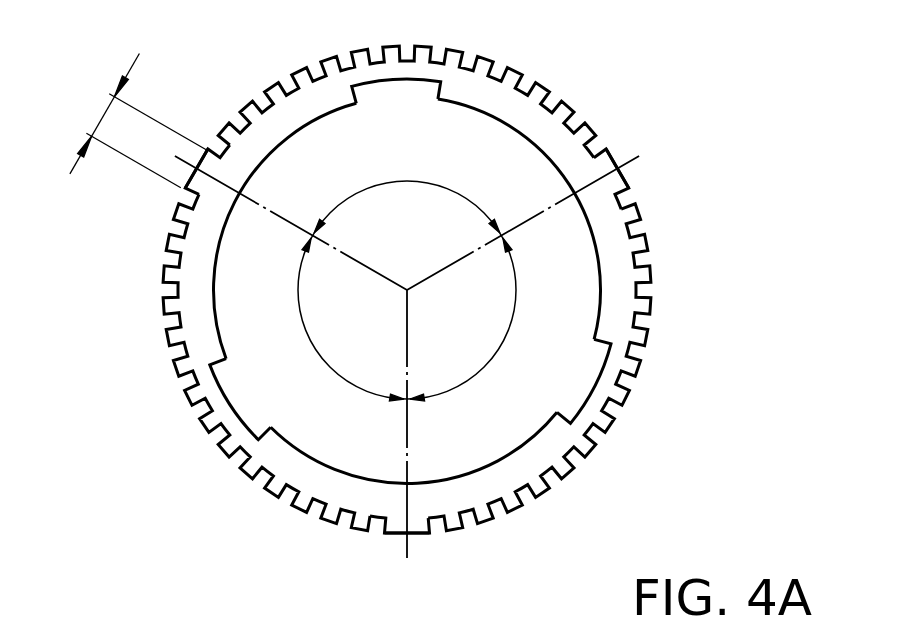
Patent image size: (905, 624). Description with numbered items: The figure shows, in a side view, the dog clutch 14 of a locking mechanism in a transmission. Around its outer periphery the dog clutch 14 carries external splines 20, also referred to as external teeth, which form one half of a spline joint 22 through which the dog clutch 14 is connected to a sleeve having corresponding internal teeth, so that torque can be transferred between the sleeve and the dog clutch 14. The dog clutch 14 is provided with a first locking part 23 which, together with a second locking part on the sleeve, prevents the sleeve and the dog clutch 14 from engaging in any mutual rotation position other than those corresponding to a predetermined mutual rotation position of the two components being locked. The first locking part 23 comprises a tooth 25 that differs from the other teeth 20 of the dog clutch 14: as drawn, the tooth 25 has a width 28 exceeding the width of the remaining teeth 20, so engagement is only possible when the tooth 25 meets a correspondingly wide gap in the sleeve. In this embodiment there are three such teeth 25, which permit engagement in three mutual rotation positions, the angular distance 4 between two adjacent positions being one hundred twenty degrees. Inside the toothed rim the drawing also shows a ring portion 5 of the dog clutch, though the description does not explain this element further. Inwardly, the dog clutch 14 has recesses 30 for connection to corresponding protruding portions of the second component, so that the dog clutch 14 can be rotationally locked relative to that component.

The angular distance 4 is at (425, 180).
The inner ring 5 is at (313, 108).
The dog clutch 14 is at (630, 50).
The external splines 20 is at (334, 63).
The spline joint 22 is at (243, 488).
The first locking part 23 is at (178, 158).
The tooth 25 is at (178, 177).
The width 28 is at (103, 122).
The recesses 30 is at (398, 90).